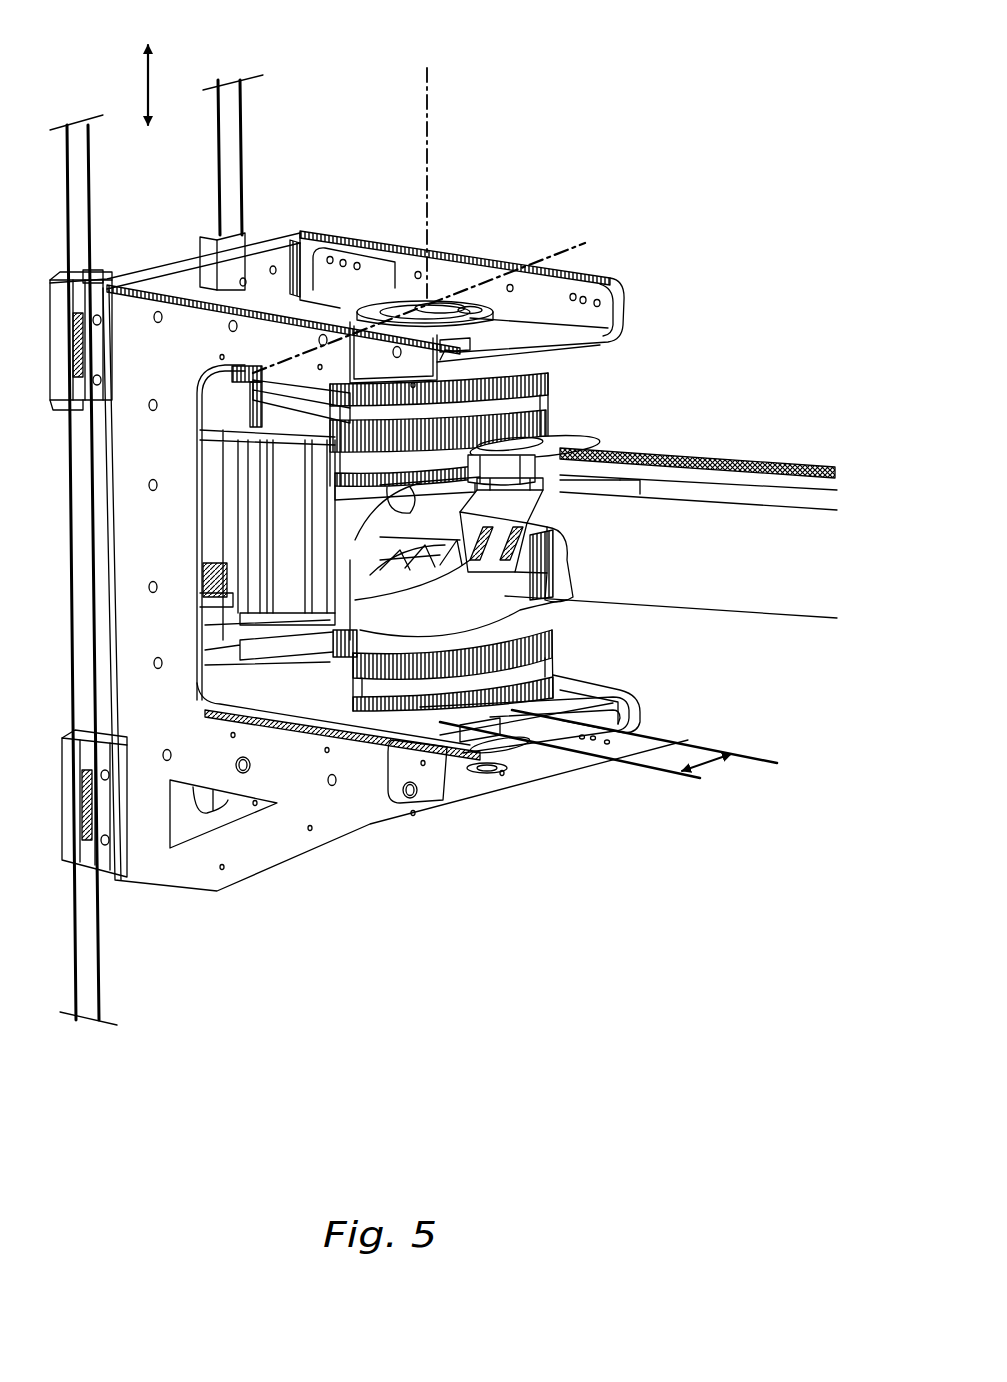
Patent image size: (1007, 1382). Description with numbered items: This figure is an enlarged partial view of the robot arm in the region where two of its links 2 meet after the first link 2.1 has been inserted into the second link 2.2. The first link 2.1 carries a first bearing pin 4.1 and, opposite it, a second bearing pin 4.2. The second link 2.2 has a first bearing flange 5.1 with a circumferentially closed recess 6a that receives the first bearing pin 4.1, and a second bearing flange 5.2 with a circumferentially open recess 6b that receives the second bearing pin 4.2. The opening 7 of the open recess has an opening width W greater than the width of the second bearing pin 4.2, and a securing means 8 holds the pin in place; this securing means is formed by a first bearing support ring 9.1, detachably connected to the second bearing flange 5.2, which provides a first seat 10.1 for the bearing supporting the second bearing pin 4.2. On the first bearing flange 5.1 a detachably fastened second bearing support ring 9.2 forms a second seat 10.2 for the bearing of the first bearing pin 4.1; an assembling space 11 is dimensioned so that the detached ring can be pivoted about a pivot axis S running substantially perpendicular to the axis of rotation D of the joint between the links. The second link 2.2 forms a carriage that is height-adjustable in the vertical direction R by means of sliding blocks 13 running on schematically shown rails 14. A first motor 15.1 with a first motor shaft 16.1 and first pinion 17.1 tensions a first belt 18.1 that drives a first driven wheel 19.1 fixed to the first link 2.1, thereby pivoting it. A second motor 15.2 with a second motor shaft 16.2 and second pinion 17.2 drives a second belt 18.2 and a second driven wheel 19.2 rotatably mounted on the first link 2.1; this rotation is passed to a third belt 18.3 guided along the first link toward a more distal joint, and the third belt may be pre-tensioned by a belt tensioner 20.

The links 2 is at (663, 589).
The first link 2.1 is at (763, 593).
The second link 2.2 is at (303, 833).
The first bearing pin 4.1 is at (457, 353).
The second bearing pin 4.2 is at (480, 710).
The first bearing flange 5.1 is at (563, 345).
The second bearing flange 5.2 is at (420, 730).
The circumferentially closed recess 6a is at (460, 353).
The circumferentially open recess 6b is at (550, 715).
The opening 7 is at (710, 767).
The opening width W is at (636, 764).
The securing means 8 is at (487, 773).
The first bearing support ring 9.1 is at (497, 865).
The second bearing support ring 9.2 is at (477, 307).
The first seat 10.1 is at (497, 747).
The second seat 10.2 is at (400, 313).
The assembling space 11 is at (367, 310).
The sliding blocks 13 is at (213, 247).
The rails 14 is at (80, 133).
The first motor 15.1 is at (340, 560).
The second motor 15.2 is at (240, 535).
The first motor shaft 16.1 is at (337, 647).
The second motor shaft 16.2 is at (233, 403).
The first pinion 17.1 is at (227, 672).
The second pinion 17.2 is at (236, 424).
The first belt 18.1 is at (343, 677).
The second belt 18.2 is at (517, 403).
The third belt 18.3 is at (792, 465).
The first driven wheel 19.1 is at (530, 677).
The second driven wheel 19.2 is at (517, 430).
The belt tensioner 20 is at (520, 467).
The vertical direction R is at (157, 90).
The axis of rotation D is at (427, 70).
The pivot axis S is at (563, 247).